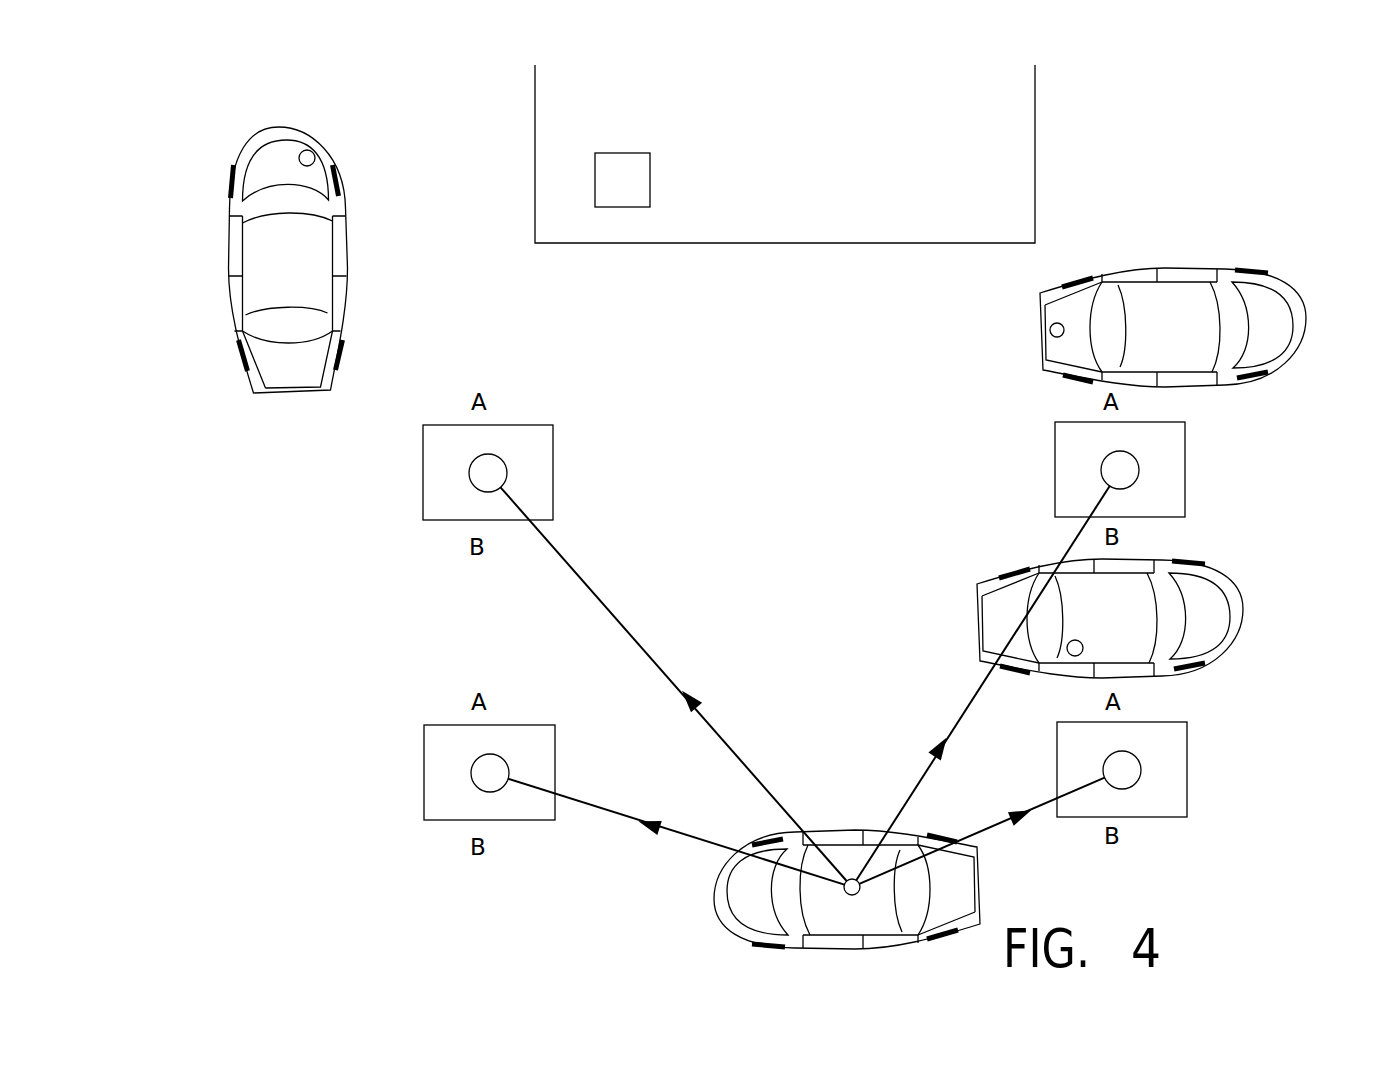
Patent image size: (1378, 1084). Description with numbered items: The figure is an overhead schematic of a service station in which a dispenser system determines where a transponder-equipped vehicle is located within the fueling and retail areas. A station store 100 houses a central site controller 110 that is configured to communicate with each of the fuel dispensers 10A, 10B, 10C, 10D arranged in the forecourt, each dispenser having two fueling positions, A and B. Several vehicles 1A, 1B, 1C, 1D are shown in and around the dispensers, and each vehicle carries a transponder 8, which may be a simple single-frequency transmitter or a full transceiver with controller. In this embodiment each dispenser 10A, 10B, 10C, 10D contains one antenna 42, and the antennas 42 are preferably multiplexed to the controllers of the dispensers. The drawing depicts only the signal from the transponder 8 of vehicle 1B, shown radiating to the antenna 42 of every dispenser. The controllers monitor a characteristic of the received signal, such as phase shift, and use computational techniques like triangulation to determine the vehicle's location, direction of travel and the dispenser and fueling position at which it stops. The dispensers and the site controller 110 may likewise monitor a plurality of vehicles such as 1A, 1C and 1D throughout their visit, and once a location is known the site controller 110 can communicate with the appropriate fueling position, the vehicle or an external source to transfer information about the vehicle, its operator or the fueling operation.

The vehicle 1A is at (1240, 596).
The vehicle 1B is at (717, 912).
The vehicle 1C is at (268, 133).
The vehicle 1D is at (1300, 306).
The transponder 8 is at (311, 151).
The dispenser 10A is at (1103, 452).
The dispenser 10B is at (1105, 752).
The dispenser 10C is at (471, 756).
The dispenser 10D is at (470, 456).
The antenna 42 is at (503, 462).
The station store 100 is at (770, 195).
The central site controller 110 is at (645, 193).